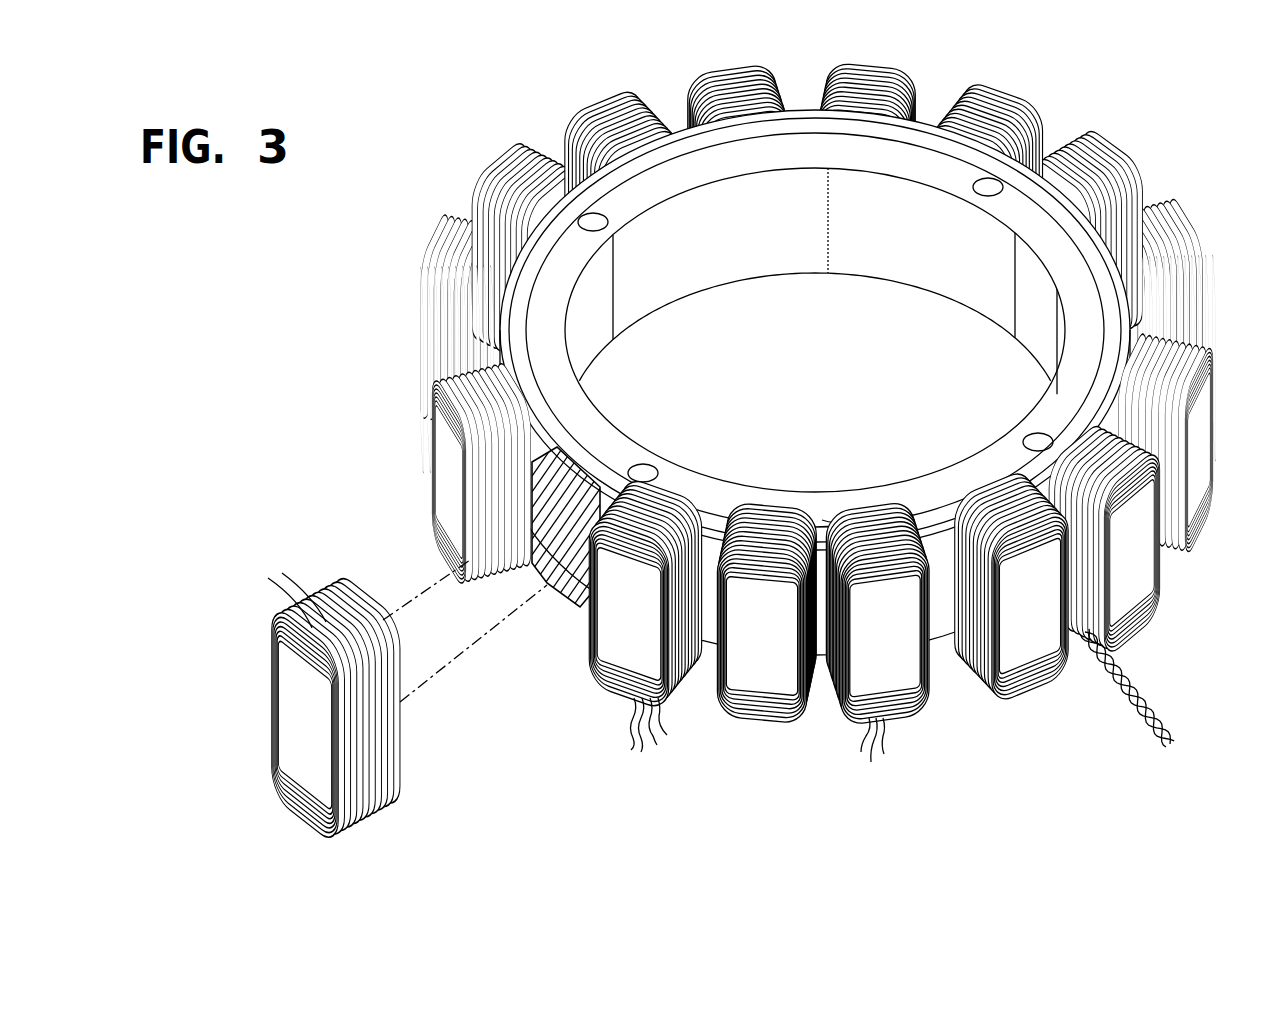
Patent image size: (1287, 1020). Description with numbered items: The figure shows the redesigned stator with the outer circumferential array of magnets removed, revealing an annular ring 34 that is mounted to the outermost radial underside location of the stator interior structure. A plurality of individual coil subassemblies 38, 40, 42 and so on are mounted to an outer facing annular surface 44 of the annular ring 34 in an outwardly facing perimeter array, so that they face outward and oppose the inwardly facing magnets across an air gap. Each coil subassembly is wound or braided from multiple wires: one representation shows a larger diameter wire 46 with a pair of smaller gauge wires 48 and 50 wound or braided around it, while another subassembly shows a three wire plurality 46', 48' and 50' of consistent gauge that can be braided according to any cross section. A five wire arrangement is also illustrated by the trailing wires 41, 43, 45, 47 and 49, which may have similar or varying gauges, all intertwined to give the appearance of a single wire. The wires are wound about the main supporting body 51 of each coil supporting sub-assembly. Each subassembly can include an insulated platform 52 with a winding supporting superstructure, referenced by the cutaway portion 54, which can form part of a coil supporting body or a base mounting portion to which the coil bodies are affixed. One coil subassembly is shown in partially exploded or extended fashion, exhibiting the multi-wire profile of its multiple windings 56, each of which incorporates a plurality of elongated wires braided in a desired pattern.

The annular ring 34 is at (568, 268).
The coil subassembly 38 is at (873, 664).
The coil subassembly 40 is at (1020, 653).
The trailing wire 41 is at (637, 646).
The coil subassembly 42 is at (1147, 560).
The trailing wire 43 is at (631, 737).
The outer facing annular surface 44 is at (837, 519).
The trailing wire 45 is at (641, 752).
The larger diameter wire 46 is at (1145, 688).
The wire 46' is at (822, 750).
The trailing wire 47 is at (657, 745).
The smaller gauge wire 48 is at (1180, 696).
The wire 48' is at (848, 773).
The trailing wire 49 is at (667, 735).
The smaller gauge wire 50 is at (1127, 700).
The wire 50' is at (894, 768).
The main supporting body 51 is at (440, 507).
The insulated platform 52 is at (607, 482).
The cutaway portion 54 is at (552, 582).
The multiple windings 56 is at (328, 699).